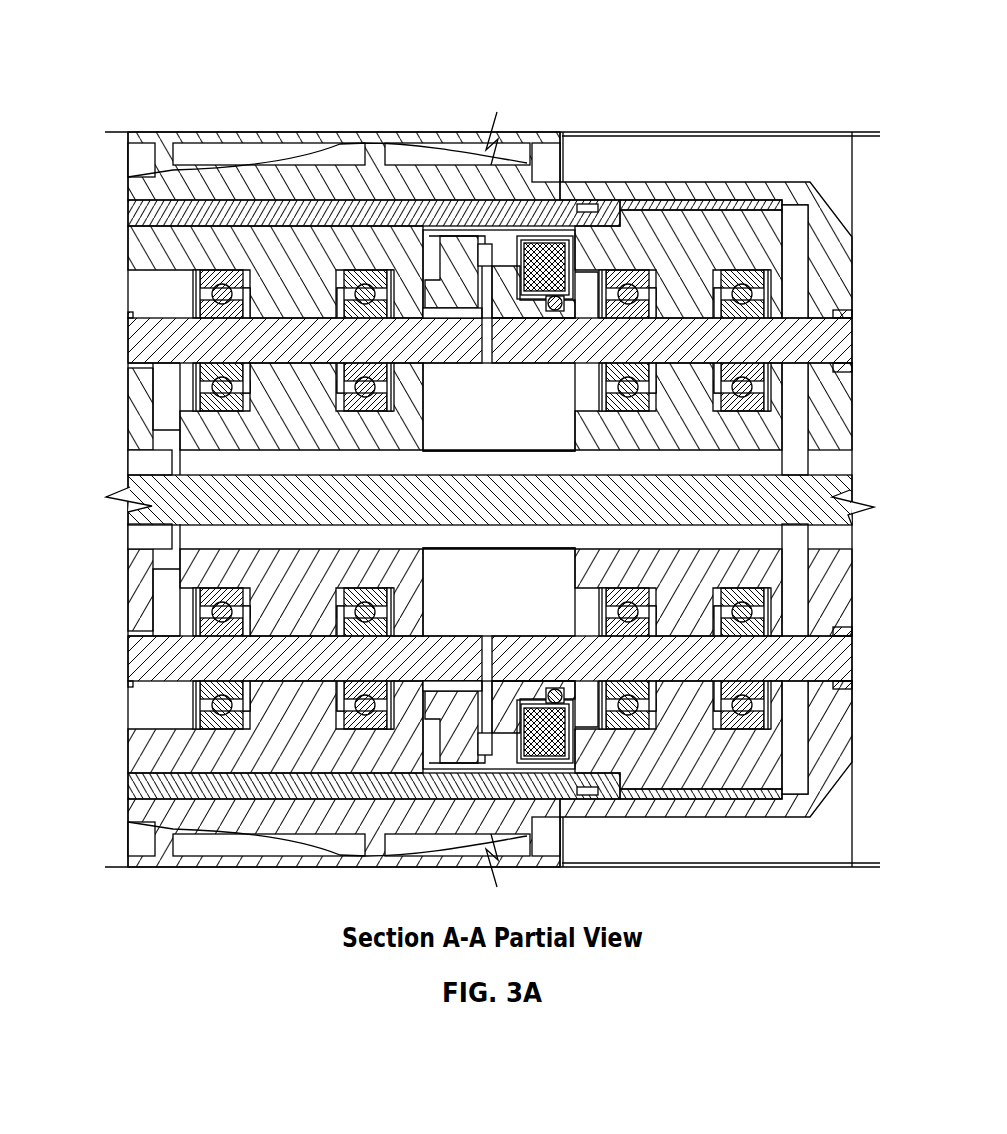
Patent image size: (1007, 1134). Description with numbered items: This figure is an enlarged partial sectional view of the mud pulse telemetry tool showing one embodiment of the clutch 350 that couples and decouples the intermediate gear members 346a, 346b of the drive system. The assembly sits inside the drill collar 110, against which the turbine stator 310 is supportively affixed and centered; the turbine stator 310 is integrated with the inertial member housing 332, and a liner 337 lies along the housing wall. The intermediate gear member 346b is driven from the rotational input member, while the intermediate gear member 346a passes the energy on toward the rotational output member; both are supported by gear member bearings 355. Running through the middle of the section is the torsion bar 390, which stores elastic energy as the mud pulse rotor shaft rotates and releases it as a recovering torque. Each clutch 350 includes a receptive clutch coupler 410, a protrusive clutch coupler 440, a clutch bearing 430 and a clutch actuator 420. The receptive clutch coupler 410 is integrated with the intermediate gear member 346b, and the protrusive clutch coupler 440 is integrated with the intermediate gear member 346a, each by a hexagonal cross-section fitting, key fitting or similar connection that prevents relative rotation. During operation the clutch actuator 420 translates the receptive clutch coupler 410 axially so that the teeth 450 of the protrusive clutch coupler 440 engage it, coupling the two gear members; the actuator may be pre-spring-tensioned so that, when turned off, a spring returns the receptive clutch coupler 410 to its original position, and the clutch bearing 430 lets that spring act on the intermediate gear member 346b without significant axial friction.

The drill collar 110 is at (722, 143).
The turbine stator 310 is at (165, 138).
The inertial member housing 332 is at (848, 207).
The liner plate 337 is at (142, 210).
The intermediate gear member 346a is at (150, 345).
The intermediate gear member 346b is at (835, 345).
The gear member bearing 355 is at (215, 276).
The torsion bar 390 is at (853, 510).
The clutch 350 is at (508, 212).
The receptive clutch coupler 410 is at (506, 264).
The clutch actuator 420 is at (548, 245).
The clutch bearing 430 is at (560, 298).
The protrusive clutch coupler 440 is at (450, 258).
The teeth 450 is at (482, 250).